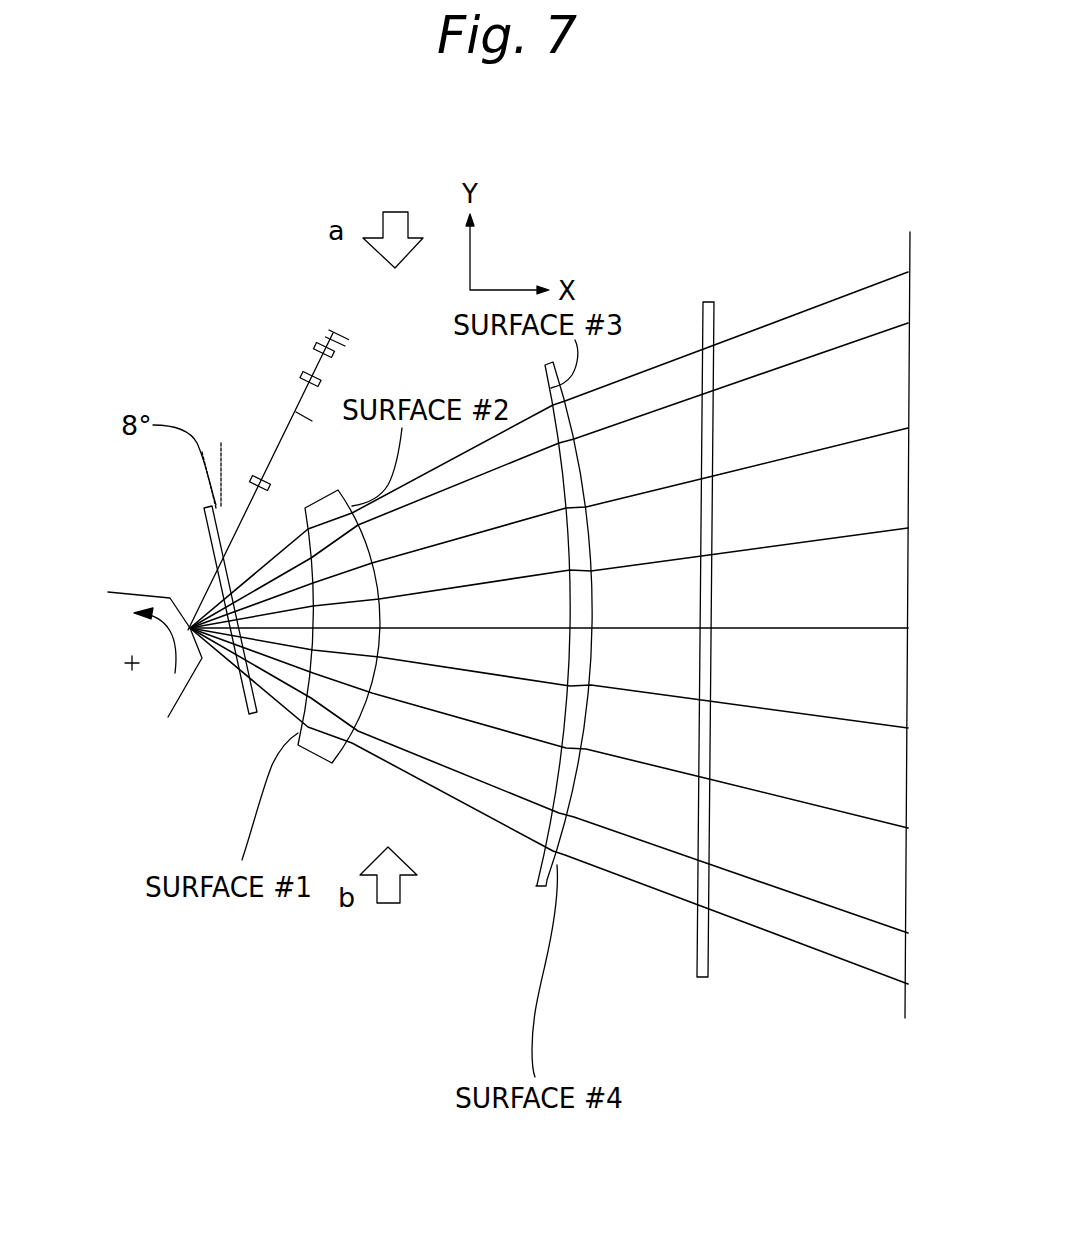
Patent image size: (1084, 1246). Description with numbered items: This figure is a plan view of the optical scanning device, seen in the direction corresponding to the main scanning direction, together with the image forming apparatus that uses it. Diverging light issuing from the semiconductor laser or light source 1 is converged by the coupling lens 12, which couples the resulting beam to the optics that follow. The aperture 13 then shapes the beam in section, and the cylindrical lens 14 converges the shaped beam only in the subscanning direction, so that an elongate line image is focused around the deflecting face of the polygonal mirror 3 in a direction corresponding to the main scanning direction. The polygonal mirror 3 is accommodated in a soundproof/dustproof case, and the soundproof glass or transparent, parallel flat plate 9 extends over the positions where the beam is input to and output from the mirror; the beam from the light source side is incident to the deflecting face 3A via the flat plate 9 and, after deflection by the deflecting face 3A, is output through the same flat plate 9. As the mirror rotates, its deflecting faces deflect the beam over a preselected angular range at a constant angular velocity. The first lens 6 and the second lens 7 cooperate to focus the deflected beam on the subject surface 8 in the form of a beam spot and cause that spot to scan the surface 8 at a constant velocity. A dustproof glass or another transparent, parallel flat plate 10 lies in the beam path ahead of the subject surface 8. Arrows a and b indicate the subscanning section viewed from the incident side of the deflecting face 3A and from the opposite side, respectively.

The light source 1 is at (317, 342).
The coupling lens 12 is at (303, 380).
The aperture 13 is at (290, 410).
The cylindrical lens 14 is at (254, 478).
The polygonal mirror 3 is at (180, 700).
The deflecting face 3A is at (185, 596).
The transparent, parallel flat plate 9 is at (257, 715).
The first lens 6 is at (316, 763).
The second lens 7 is at (537, 870).
The transparent, parallel flat plate 10 is at (700, 953).
The subject surface 8 is at (903, 973).